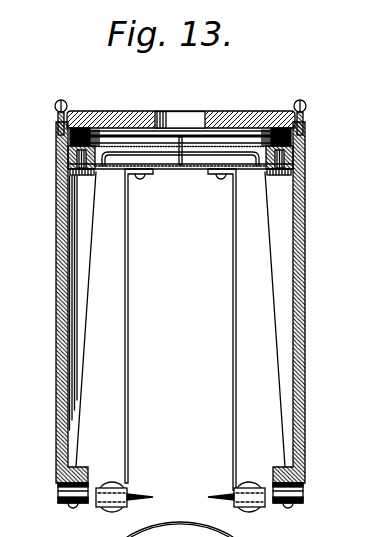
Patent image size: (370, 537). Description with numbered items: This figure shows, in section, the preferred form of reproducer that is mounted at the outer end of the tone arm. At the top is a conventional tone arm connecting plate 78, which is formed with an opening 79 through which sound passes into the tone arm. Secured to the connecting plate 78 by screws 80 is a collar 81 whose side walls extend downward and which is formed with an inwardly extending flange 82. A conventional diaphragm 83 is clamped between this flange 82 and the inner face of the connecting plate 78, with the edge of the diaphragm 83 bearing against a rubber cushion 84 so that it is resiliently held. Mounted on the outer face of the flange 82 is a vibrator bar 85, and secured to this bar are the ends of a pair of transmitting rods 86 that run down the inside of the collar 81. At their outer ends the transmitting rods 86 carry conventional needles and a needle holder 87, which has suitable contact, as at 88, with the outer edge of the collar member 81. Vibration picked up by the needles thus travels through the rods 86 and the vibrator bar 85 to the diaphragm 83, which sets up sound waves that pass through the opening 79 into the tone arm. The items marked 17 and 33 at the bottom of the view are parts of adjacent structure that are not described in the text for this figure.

The tone arm connecting plate 78 is at (128, 117).
The opening 79 is at (182, 122).
The screws 80 is at (307, 120).
The collar 81 is at (307, 258).
The inwardly extending flange 82 is at (302, 157).
The diaphragm 83 is at (100, 130).
The rubber cushion 84 is at (70, 143).
The vibrator bar 85 is at (204, 172).
The transmitting rods 86 is at (234, 250).
The needles and needle holder 87 is at (128, 495).
The contact 88 is at (65, 499).
The arc member 17 is at (238, 524).
The member 33 is at (276, 530).